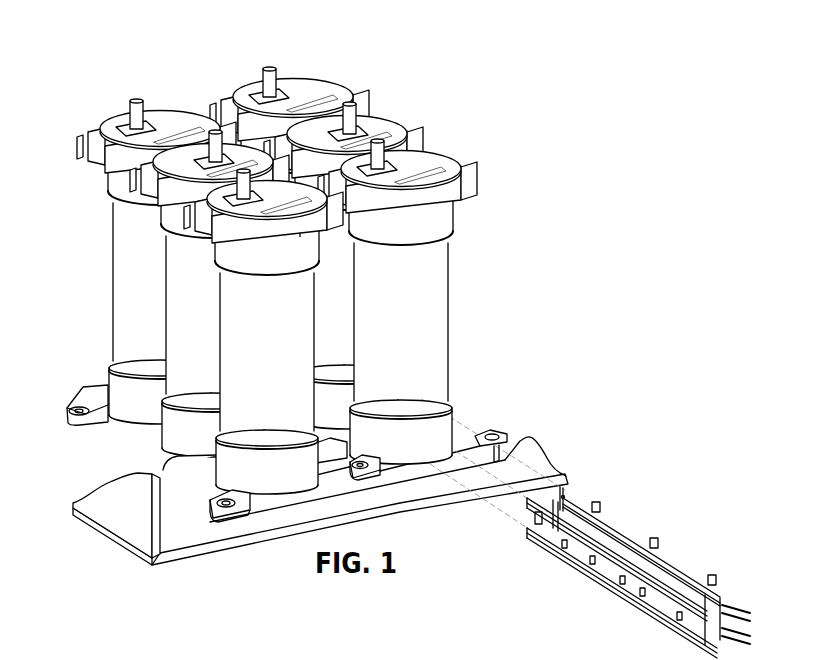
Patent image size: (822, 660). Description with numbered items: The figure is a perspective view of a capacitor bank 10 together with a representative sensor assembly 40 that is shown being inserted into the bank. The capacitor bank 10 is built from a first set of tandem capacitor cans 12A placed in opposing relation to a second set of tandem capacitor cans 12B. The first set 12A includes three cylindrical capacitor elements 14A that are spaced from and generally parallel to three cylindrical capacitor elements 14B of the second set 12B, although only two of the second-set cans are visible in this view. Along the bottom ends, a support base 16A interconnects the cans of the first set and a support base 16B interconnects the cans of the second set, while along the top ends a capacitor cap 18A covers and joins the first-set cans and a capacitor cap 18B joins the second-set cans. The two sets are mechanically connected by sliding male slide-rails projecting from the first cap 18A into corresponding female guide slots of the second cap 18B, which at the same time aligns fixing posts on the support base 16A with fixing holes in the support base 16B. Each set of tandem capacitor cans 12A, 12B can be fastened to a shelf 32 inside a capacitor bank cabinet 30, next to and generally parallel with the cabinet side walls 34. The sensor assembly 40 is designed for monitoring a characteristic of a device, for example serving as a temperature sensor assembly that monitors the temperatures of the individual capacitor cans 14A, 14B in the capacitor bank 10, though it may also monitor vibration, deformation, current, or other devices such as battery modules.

The capacitor bank 10 is at (380, 334).
The first set of tandem capacitor cans 12A is at (180, 280).
The second set of tandem capacitor cans 12B is at (378, 245).
The cylindrical capacitor elements 14A is at (135, 282).
The cylindrical capacitor elements 14B is at (342, 288).
The support base 16A is at (182, 437).
The support base 16B is at (442, 425).
The capacitor cap 18A is at (164, 115).
The capacitor cap 18B is at (306, 80).
The capacitor bank cabinet 30 is at (289, 526).
The shelf 32 is at (184, 533).
The cabinet side walls 34 is at (120, 497).
The sensor assembly 40 is at (655, 505).